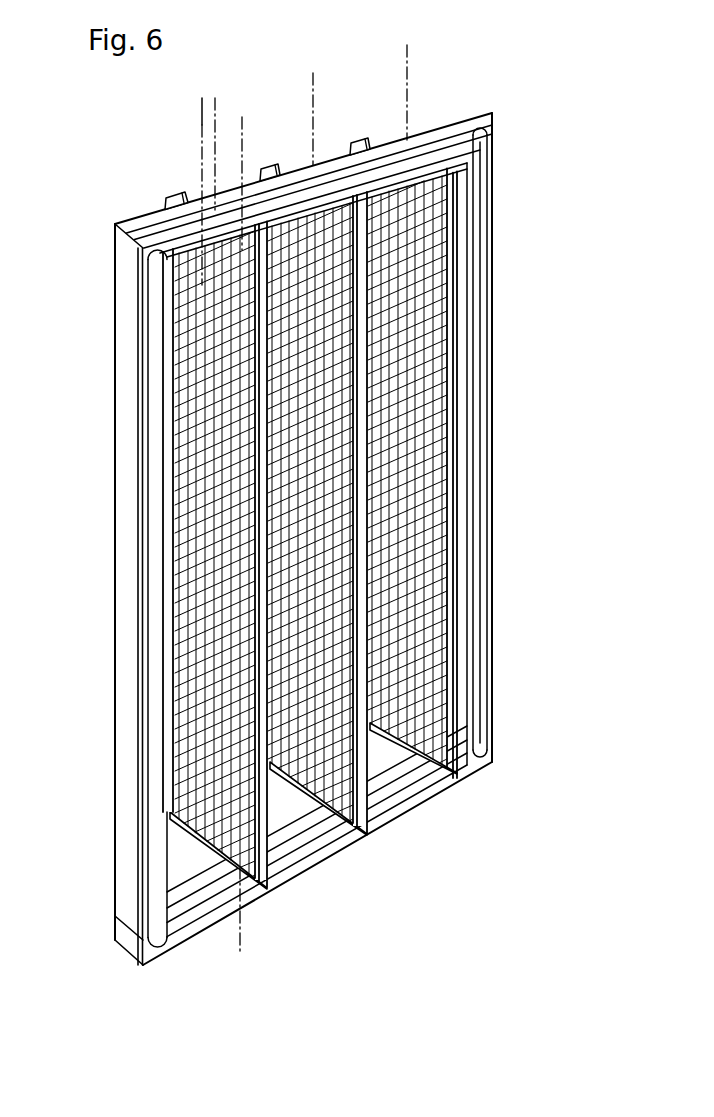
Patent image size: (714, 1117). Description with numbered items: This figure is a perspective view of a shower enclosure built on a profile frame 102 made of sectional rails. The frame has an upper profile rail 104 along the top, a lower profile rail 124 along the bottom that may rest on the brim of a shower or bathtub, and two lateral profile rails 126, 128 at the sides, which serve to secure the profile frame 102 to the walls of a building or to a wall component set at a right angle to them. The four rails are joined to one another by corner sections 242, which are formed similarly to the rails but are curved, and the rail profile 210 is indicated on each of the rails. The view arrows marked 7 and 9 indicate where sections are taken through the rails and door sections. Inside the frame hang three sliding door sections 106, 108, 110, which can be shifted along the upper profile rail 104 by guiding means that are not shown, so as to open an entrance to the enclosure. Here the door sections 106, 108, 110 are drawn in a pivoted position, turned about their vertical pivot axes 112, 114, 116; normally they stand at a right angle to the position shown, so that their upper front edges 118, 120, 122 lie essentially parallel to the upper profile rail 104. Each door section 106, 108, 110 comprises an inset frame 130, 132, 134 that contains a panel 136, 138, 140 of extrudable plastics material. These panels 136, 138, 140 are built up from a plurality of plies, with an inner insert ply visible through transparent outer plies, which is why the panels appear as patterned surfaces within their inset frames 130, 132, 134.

The profile frame 102 is at (500, 284).
The upper profile rail 104 is at (482, 120).
The first door section 106 is at (192, 300).
The second door section 108 is at (293, 392).
The third door section 110 is at (428, 348).
The vertical pivot axis 112 is at (208, 110).
The vertical pivot axis 114 is at (316, 80).
The vertical pivot axis 116 is at (408, 58).
The upper front edge 118 is at (180, 192).
The upper front edge 120 is at (350, 205).
The upper front edge 122 is at (443, 173).
The bottom rail 124 is at (193, 933).
The lateral profile rail 126 is at (125, 752).
The lateral profile rail 128 is at (492, 577).
The inset frame 130 is at (275, 870).
The inset frame 132 is at (367, 817).
The inset frame 134 is at (457, 516).
The panel 136 is at (207, 502).
The panel 138 is at (305, 450).
The panel 140 is at (423, 420).
The channel slot 210 is at (475, 163).
The corner section 242 is at (115, 243).
The section line 7- 7 is at (248, 122).
The section line 9- 9 is at (200, 116).